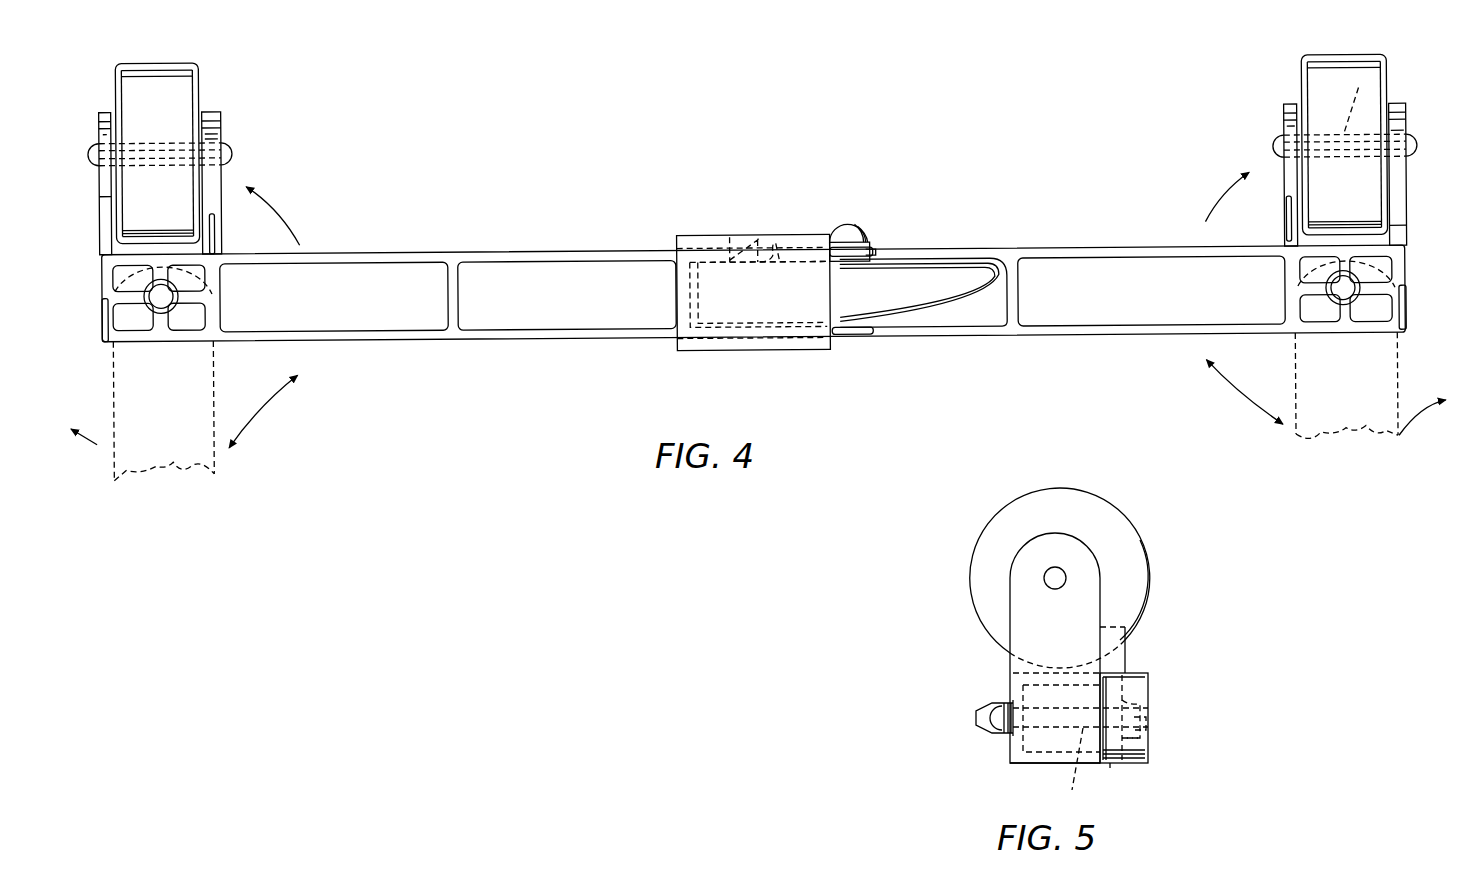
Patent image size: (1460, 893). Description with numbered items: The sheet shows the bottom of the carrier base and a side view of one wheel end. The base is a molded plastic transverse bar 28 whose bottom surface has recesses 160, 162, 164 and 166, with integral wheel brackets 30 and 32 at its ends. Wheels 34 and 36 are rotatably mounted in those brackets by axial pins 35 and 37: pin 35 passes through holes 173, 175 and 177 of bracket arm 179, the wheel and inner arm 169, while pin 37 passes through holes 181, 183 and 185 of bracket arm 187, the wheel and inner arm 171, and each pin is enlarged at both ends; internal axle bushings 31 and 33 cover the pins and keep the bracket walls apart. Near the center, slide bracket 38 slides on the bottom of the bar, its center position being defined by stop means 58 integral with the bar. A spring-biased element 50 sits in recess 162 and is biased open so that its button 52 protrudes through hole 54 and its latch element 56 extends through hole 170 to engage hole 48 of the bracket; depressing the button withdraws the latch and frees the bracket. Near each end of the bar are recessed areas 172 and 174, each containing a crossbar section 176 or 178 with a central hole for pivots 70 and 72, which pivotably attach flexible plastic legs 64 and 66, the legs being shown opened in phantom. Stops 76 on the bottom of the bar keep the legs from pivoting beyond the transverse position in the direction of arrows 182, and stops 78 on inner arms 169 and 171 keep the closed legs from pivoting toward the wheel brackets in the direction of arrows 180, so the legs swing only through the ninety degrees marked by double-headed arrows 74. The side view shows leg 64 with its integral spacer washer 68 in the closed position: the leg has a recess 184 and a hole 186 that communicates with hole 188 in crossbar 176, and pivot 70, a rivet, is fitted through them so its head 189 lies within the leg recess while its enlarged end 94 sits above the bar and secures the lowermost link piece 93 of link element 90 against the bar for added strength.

In FIG. 4, the transverse bar 28 is at (536, 249).
In FIG. 5, the transverse bar 28 is at (1033, 764).
In FIG. 4, the wheel bracket 30 is at (1407, 222).
In FIG. 5, the wheel bracket 30 is at (1101, 582).
In FIG. 4, the internal axle bushing 31 is at (1340, 138).
In FIG. 4, the wheel bracket 32 is at (100, 208).
In FIG. 4, the internal axle bushing 33 is at (158, 140).
In FIG. 4, the wheel 34 is at (1336, 58).
In FIG. 5, the wheel 34 is at (1085, 498).
In FIG. 4, the axial pin 35 is at (1410, 150).
In FIG. 4, the wheel 36 is at (130, 58).
In FIG. 4, the axial pin 37 is at (92, 155).
In FIG. 4, the slide bracket 38 is at (738, 352).
In FIG. 4, the hole 48 is at (732, 236).
In FIG. 4, the spring-biased element 50 is at (988, 266).
In FIG. 4, the button 52 is at (850, 227).
In FIG. 4, the hole 54 is at (874, 251).
In FIG. 4, the latch element 56 is at (758, 236).
In FIG. 4, the stop means 58 is at (857, 259).
In FIG. 4, the leg 64 is at (1335, 394).
In FIG. 5, the leg 64 is at (1150, 762).
In FIG. 4, the leg 66 is at (180, 411).
In FIG. 5, the integral spacer washer 68 is at (1110, 764).
In FIG. 5, the pivot 70 is at (1143, 712).
In FIG. 4, the pivot 72 is at (161, 310).
In FIG. 4, the double-headed arrow 74 is at (276, 400).
In FIG. 4, the stop 76 is at (102, 312).
In FIG. 4, the stop 78 is at (216, 226).
In FIG. 5, the stop 78 is at (1126, 652).
In FIG. 5, the link element 90 is at (997, 700).
In FIG. 5, the link piece 93 is at (976, 712).
In FIG. 5, the enlarged end 94 is at (1000, 735).
In FIG. 4, the recess 160 is at (1080, 325).
In FIG. 4, the recess 162 is at (985, 320).
In FIG. 4, the recess 164 is at (560, 328).
In FIG. 4, the recess 166 is at (375, 330).
In FIG. 4, the inner arm 169 is at (1286, 185).
In FIG. 4, the hole 170 is at (779, 270).
In FIG. 4, the inner arm 171 is at (216, 184).
In FIG. 4, the recessed area 172 is at (1385, 265).
In FIG. 4, the hole 173 is at (1393, 160).
In FIG. 4, the recessed area 174 is at (115, 274).
In FIG. 4, the hole 175 is at (1360, 95).
In FIG. 4, the crossbar section 176 is at (125, 298).
In FIG. 4, the hole 177 is at (1290, 140).
In FIG. 4, the crossbar section 178 is at (164, 327).
In FIG. 4, the bracket arm 179 is at (1407, 200).
In FIG. 4, the arrow 180 is at (280, 201).
In FIG. 4, the hole 181 is at (101, 125).
In FIG. 4, the arrow 182 is at (96, 440).
In FIG. 4, the hole 183 is at (205, 128).
In FIG. 5, the recess 184 is at (1147, 739).
In FIG. 4, the hole 185 is at (165, 142).
In FIG. 5, the hole 186 is at (1150, 678).
In FIG. 4, the bracket arm 187 is at (100, 195).
In FIG. 5, the hole 188 is at (1074, 786).
In FIG. 5, the head 189 is at (1149, 725).